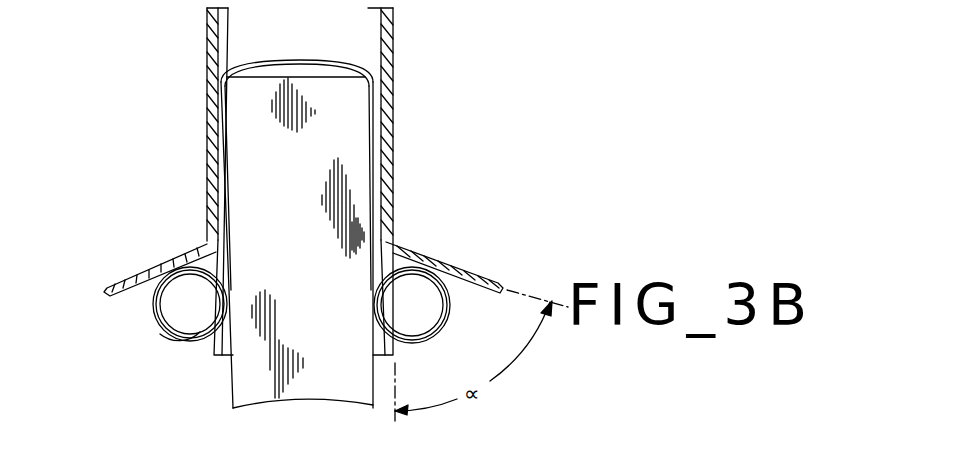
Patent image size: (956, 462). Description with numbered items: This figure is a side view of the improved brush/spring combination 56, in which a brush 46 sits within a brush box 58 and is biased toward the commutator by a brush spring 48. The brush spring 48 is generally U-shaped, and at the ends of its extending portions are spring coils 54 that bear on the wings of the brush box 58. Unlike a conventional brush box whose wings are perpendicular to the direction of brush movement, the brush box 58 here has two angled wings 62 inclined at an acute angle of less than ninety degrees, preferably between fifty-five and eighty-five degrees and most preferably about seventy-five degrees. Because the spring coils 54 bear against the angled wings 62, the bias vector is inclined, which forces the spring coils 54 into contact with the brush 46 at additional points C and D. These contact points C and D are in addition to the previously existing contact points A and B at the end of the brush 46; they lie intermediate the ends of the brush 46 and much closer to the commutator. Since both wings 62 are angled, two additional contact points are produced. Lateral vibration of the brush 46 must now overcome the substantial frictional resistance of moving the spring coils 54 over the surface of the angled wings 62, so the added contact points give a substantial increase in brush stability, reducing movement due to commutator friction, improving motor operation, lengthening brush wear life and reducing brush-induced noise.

The brush 46 is at (357, 136).
The brush spring 48 is at (178, 338).
The spring coils 54 is at (154, 317).
The improved brush/spring combination 56 is at (407, 140).
The brush box 58 is at (393, 186).
The angled wings 62 is at (153, 263).
The contact point A is at (232, 77).
The contact point B is at (363, 77).
The contact point C is at (372, 303).
The contact point D is at (233, 299).